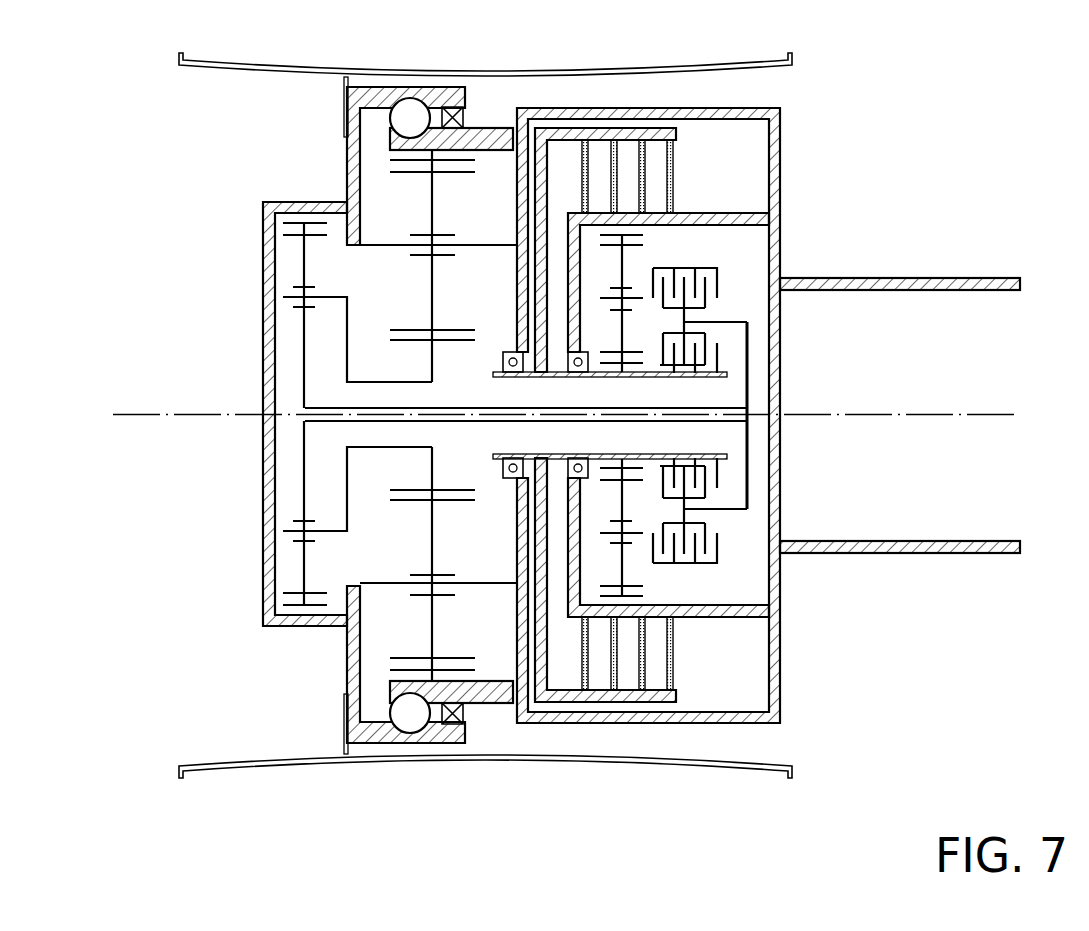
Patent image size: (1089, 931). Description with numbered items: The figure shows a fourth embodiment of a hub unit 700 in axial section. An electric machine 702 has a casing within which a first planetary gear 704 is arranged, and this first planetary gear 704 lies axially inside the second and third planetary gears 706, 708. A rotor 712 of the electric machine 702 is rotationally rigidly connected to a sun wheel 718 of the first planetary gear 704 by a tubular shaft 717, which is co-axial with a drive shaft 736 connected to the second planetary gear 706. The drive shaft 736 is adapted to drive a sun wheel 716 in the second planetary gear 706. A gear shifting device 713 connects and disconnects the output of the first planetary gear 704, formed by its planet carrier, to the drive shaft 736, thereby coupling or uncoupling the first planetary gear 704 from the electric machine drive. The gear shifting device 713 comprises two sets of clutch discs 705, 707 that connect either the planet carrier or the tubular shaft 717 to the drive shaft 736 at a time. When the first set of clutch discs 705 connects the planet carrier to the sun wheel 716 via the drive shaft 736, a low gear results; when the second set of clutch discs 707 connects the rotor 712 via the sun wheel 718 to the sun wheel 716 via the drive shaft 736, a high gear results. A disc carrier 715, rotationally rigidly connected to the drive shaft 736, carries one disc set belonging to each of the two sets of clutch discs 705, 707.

The hub unit 700 is at (858, 738).
The electric machine 702 is at (644, 662).
The first planetary gear 704 is at (624, 656).
The first set of clutch discs 705 is at (735, 286).
The second planetary gear 706 is at (297, 652).
The second set of clutch discs 707 is at (724, 350).
The third planetary gear 708 is at (425, 773).
The rotor 712 is at (547, 667).
The gear shifting device 713 is at (729, 569).
The disc carrier 715 is at (749, 437).
The sun wheel 716 is at (303, 395).
The tubular shaft 717 is at (657, 378).
The sun wheel 718 is at (632, 454).
The drive shaft 736 is at (330, 422).